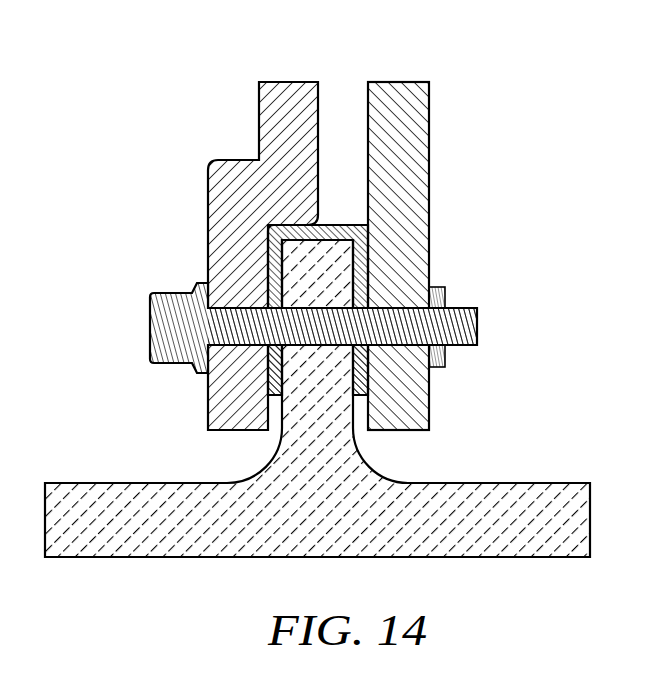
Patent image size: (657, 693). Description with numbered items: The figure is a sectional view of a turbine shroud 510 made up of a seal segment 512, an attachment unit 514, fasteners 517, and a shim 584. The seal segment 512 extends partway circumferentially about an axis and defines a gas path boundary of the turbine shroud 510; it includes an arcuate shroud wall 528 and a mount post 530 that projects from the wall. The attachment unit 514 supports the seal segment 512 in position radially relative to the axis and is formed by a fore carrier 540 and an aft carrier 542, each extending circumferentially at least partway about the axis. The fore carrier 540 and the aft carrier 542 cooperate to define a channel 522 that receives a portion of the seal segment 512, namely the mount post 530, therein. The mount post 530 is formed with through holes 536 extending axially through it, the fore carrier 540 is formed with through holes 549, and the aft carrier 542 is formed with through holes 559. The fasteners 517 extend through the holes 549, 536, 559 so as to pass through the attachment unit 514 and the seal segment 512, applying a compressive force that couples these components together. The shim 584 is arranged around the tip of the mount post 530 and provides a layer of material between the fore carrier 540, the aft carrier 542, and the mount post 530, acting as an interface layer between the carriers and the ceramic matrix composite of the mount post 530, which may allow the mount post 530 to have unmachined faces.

The turbine shroud 510 is at (180, 90).
The seal segment 512 is at (302, 433).
The attachment unit 514 is at (219, 250).
The fasteners 517 is at (270, 304).
The channel 522 is at (276, 400).
The arcuate shroud wall 528 is at (115, 558).
The mount post 530 is at (368, 420).
The through holes 536 is at (335, 354).
The fore carrier 540 is at (246, 157).
The aft carrier 542 is at (432, 135).
The through holes 549 is at (230, 326).
The through holes 559 is at (435, 325).
The shim 584 is at (355, 215).